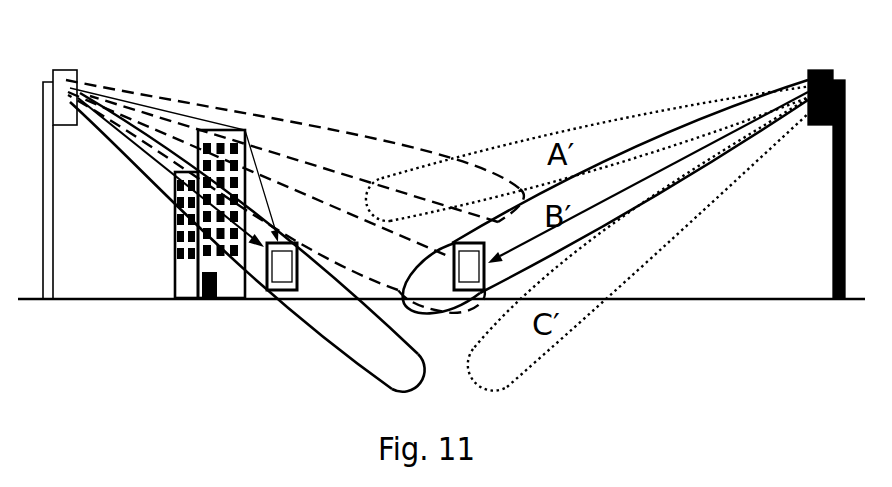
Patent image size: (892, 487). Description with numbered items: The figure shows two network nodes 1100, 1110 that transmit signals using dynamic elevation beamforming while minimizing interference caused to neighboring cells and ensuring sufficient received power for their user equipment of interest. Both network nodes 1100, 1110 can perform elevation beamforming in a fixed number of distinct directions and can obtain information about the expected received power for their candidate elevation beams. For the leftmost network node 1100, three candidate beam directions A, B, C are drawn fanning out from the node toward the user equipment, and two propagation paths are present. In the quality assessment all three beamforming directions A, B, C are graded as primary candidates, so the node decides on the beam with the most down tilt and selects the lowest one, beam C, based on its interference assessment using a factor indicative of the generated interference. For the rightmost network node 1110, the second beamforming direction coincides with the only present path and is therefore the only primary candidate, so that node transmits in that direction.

The network node 1100 is at (63, 70).
The network node 1110 is at (808, 70).
The elevation beam candidate A is at (295, 151).
The elevation beam candidate B is at (276, 202).
The elevation beam candidate C is at (247, 242).